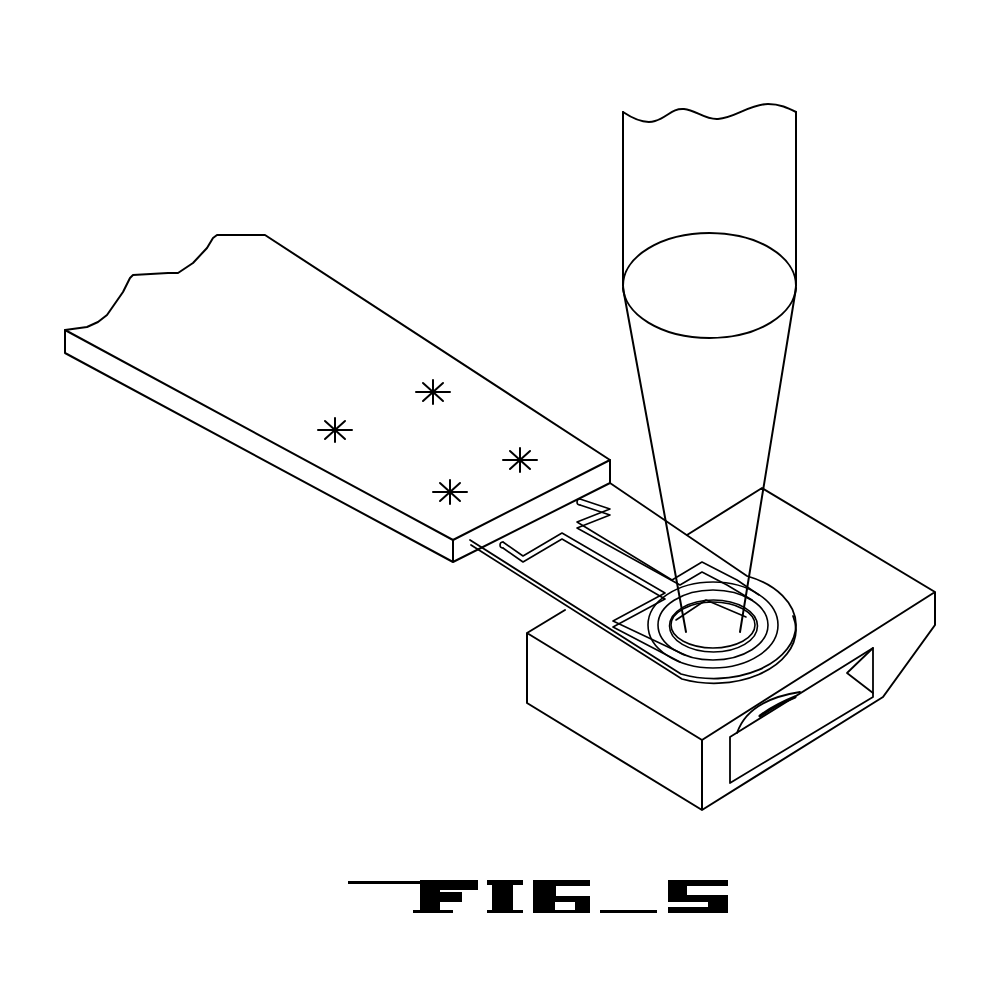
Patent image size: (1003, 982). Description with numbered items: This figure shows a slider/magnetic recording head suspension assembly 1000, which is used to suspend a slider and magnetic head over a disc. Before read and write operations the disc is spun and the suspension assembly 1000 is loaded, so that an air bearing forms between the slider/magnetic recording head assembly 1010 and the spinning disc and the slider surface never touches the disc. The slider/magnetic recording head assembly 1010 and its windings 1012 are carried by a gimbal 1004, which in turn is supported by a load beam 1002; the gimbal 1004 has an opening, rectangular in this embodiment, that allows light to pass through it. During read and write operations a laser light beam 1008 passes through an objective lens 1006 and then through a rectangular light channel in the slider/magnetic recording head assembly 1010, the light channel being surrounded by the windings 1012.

The slider/magnetic recording head suspension assembly 1000 is at (333, 58).
The load beam 1002 is at (262, 448).
The gimbal 1004 is at (497, 562).
The objective lens 1006 is at (796, 283).
The laser light beam 1008 is at (771, 438).
The slider/magnetic recording head assembly 1010 is at (904, 548).
The windings 1012 is at (800, 695).